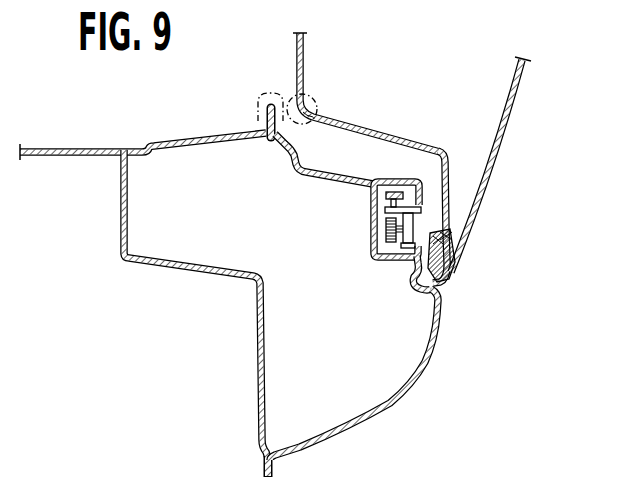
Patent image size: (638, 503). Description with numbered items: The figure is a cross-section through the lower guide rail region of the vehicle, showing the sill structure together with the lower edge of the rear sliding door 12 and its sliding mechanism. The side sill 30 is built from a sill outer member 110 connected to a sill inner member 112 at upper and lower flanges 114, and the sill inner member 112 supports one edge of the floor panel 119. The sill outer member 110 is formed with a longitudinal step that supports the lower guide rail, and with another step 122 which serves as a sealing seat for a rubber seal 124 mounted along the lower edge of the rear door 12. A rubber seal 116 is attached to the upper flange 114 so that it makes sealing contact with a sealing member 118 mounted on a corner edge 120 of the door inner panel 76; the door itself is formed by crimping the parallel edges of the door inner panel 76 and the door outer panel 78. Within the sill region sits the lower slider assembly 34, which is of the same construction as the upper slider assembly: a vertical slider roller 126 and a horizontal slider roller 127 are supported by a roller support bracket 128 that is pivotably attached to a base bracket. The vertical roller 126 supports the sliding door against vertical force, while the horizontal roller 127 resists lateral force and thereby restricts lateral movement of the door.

The rear sliding door 12 is at (516, 142).
The side sill 30 is at (407, 404).
The lower slider assembly 34 is at (427, 197).
The door inner panel 76 is at (306, 42).
The door outer panel 78 is at (523, 88).
The sill outer member 110 is at (436, 336).
The sill inner member 112 is at (181, 276).
The upper and lower flanges 114 is at (274, 469).
The rubber seal 116 is at (263, 97).
The sealing member 118 is at (318, 88).
The floor panel 119 is at (89, 148).
The corner edge 120 is at (316, 107).
The step 122 is at (431, 285).
The rubber seal 124 is at (413, 274).
The vertical slider roller 126 is at (377, 243).
The horizontal slider roller 127 is at (398, 196).
The roller support bracket 128 is at (426, 211).